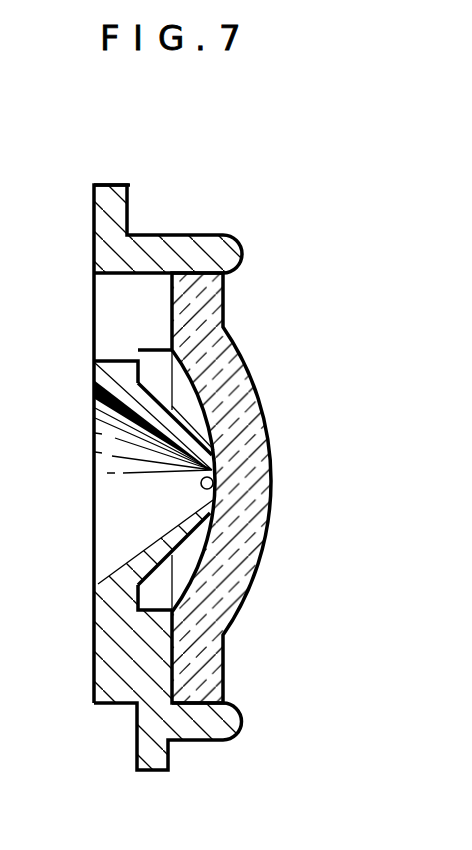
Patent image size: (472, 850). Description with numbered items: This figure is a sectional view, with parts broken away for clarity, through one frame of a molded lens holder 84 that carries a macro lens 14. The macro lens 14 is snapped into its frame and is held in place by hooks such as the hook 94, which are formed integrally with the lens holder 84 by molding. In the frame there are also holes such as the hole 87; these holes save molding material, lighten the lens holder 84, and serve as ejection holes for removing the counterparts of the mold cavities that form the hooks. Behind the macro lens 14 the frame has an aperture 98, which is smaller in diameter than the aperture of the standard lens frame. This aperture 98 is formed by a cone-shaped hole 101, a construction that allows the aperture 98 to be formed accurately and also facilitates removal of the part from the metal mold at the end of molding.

The macro lens 14 is at (250, 597).
The lens holder 84 is at (179, 198).
The hole 87 is at (125, 283).
The hook 94 is at (242, 267).
The aperture 98 is at (214, 473).
The cone-shaped hole 101 is at (136, 561).